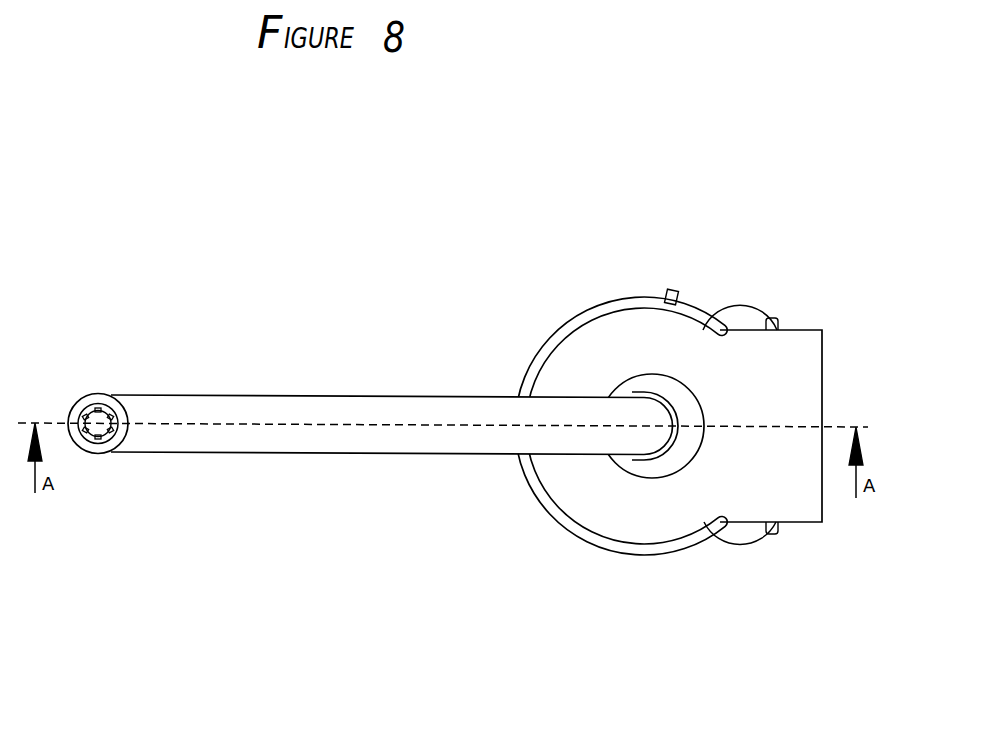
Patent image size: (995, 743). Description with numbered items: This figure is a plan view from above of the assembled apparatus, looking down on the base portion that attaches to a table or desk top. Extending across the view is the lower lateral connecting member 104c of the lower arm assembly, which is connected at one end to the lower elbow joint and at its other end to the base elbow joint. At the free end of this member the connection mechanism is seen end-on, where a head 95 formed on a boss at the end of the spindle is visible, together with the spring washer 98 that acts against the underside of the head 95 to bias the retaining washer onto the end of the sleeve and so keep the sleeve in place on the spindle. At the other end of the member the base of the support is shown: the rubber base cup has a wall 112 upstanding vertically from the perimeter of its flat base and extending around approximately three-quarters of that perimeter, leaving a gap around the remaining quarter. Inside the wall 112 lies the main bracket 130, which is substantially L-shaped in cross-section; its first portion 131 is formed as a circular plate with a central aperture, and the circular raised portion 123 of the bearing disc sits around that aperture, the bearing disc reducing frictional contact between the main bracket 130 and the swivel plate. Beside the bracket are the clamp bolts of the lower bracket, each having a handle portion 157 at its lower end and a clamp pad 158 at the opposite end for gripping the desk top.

The spring washer 98 is at (90, 407).
The head 95 is at (107, 440).
The lower lateral connecting member 104c is at (317, 407).
The wall 112 is at (586, 320).
The handle portion 157 is at (668, 288).
The clamp pad 158 is at (746, 319).
The first portion 131 is at (578, 503).
The circular raised portion 123 is at (633, 468).
The main bracket 130 is at (810, 532).